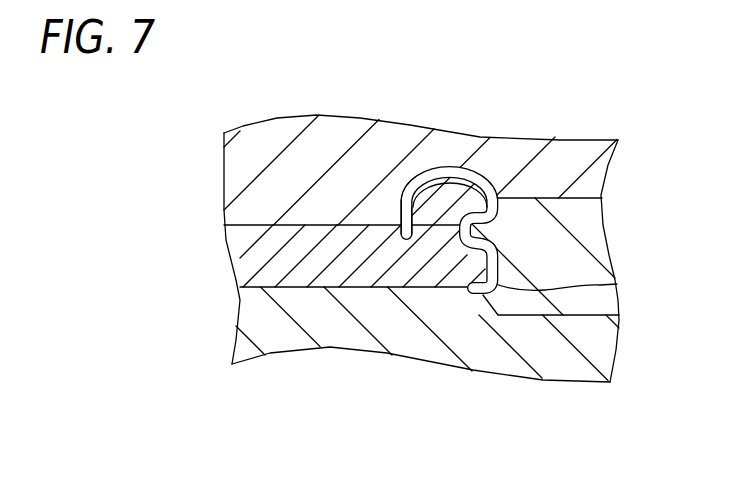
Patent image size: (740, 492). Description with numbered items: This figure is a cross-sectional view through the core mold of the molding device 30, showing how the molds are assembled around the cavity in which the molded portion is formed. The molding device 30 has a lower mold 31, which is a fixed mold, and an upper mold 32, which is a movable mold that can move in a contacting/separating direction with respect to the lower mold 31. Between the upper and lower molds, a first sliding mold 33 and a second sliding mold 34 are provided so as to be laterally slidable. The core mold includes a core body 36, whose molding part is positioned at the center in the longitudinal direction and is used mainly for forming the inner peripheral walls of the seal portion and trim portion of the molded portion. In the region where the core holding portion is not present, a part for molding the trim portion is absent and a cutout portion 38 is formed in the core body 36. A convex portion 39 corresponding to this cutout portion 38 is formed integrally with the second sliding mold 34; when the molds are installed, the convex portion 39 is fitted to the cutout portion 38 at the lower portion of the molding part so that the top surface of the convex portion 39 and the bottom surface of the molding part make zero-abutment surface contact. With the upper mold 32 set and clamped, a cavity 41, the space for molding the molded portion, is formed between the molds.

The molding device 30 is at (178, 183).
The lower mold 31 is at (353, 338).
The upper mold 32 is at (350, 113).
The first sliding mold 33 is at (598, 243).
The second sliding mold 34 is at (240, 260).
The core body 36 is at (470, 158).
The cutout portion 38 is at (458, 177).
The convex portion 39 is at (411, 175).
The cavity 41 is at (617, 284).